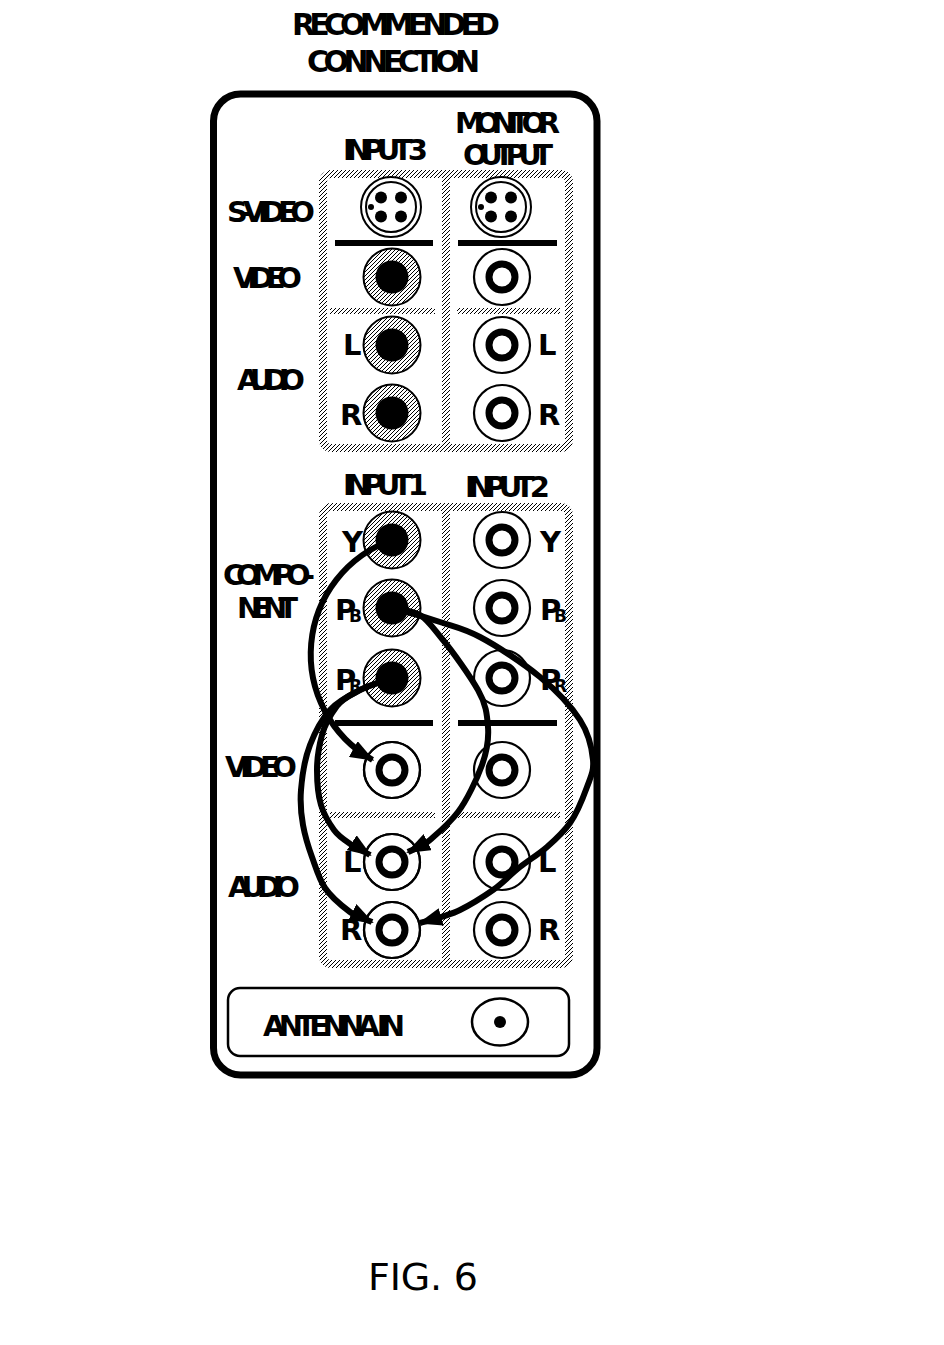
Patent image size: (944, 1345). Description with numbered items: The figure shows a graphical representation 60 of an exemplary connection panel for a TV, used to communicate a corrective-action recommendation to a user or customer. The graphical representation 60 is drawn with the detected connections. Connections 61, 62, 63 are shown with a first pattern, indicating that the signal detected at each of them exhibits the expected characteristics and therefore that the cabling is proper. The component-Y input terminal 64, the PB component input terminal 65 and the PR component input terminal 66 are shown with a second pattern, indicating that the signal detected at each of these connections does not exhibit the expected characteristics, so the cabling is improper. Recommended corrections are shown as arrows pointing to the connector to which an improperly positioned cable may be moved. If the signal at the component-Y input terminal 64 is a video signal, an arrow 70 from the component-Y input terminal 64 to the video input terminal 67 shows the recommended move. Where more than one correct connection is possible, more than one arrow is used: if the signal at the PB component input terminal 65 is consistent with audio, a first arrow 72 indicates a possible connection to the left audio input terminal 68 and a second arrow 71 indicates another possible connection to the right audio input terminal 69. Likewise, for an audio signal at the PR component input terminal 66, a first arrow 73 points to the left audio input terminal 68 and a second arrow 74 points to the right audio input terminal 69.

The graphical representation 60 is at (302, 1088).
The connection 61 is at (363, 290).
The connection 62 is at (367, 367).
The connection 63 is at (363, 432).
The component-Y input terminal 64 is at (423, 537).
The PB component input terminal 65 is at (420, 596).
The PR component input terminal 66 is at (423, 667).
The video input terminal 67 is at (423, 763).
The left audio input terminal 68 is at (423, 877).
The right audio input terminal 69 is at (420, 945).
The arrow 70 is at (307, 640).
The second arrow 71 is at (593, 716).
The first arrow 72 is at (473, 803).
The first arrow 73 is at (337, 837).
The second arrow 74 is at (333, 900).